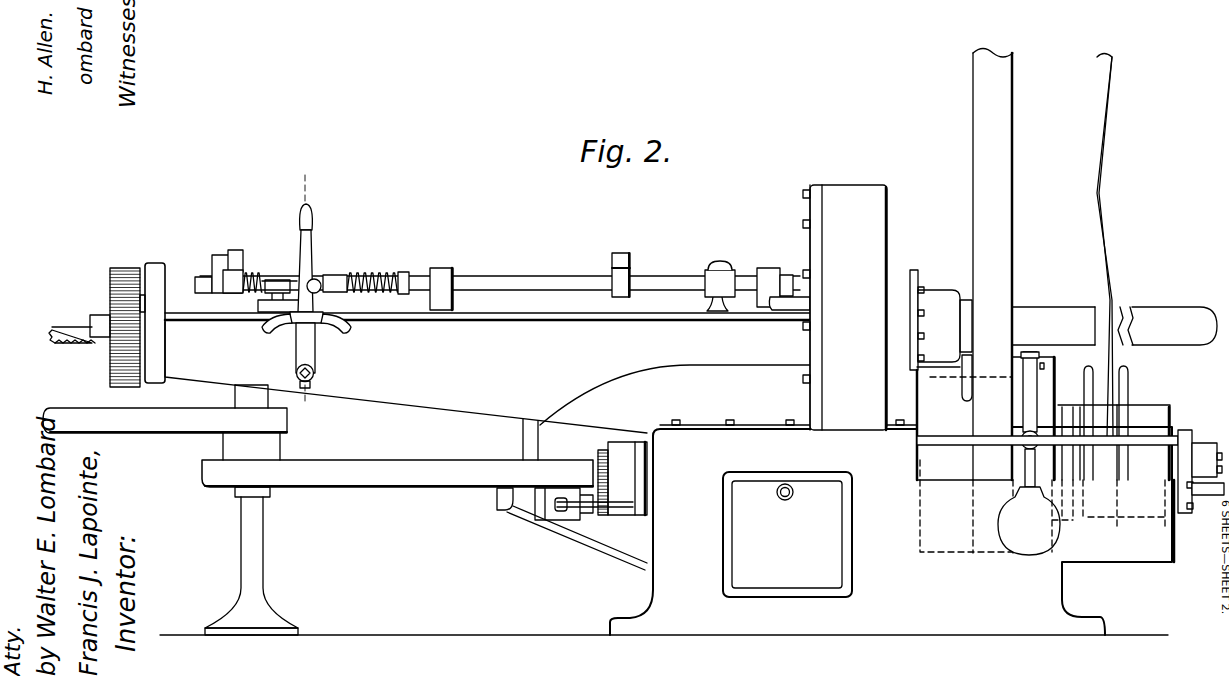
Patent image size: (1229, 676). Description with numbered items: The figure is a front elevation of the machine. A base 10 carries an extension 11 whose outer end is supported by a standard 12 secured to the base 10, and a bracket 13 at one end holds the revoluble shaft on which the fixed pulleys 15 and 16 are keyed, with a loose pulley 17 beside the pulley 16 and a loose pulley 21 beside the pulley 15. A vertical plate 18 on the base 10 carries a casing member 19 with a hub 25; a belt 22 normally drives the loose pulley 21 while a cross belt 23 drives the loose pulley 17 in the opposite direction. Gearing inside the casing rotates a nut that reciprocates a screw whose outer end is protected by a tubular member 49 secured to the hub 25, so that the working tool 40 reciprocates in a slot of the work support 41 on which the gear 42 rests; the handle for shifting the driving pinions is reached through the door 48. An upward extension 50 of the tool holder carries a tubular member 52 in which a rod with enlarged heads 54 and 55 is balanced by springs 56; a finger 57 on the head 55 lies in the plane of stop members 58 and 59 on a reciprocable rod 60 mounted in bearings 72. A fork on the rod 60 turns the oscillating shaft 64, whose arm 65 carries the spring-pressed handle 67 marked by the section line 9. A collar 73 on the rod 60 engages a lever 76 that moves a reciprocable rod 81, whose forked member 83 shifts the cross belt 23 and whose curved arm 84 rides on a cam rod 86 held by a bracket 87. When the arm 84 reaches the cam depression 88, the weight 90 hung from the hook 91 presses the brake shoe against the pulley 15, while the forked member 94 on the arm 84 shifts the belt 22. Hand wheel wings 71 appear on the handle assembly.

The section line 9 is at (304, 291).
The base 10 is at (650, 588).
The extension 11 is at (436, 396).
The standard 12 is at (258, 535).
The bracket 13 is at (1203, 452).
The pulley 15 is at (1045, 384).
The pulley 16 is at (1065, 473).
The pulley 17 is at (1153, 418).
The vertical plate 18 is at (812, 206).
The casing member 19 is at (852, 190).
The loose pulley 21 is at (935, 470).
The belt 22 is at (995, 221).
The cross belt 23 is at (1108, 152).
The hub 25 is at (902, 288).
The working tool 40 is at (66, 332).
The work support 41 is at (100, 318).
The gear 42 is at (124, 268).
The door 48 is at (830, 548).
The tubular member 49 is at (1062, 318).
The upward extension 50 is at (322, 287).
The tubular member 52 is at (332, 274).
The enlarged head 54 is at (406, 271).
The enlarged head 55 is at (235, 283).
The spring 56 is at (256, 272).
The finger 57 is at (237, 249).
The stop member 58 is at (218, 257).
The stop member 59 is at (621, 255).
The reciprocable rod 60 is at (515, 280).
The oscillating shaft 64 is at (314, 376).
The arm 65 is at (317, 348).
The handle 67 is at (313, 212).
The hand wheel 71 is at (268, 332).
The bearing 72 is at (445, 270).
The collar 73 is at (710, 282).
The lever 76 is at (718, 262).
The reciprocable rod 81 is at (1207, 500).
The forked member 83 is at (1128, 375).
The curved arm 84 is at (1030, 350).
The cam rod 86 is at (1144, 440).
The bracket 87 is at (1186, 435).
The cam depression 88 is at (1040, 437).
The weight 90 is at (1030, 547).
The hook 91 is at (1022, 446).
The forked member 94 is at (963, 390).